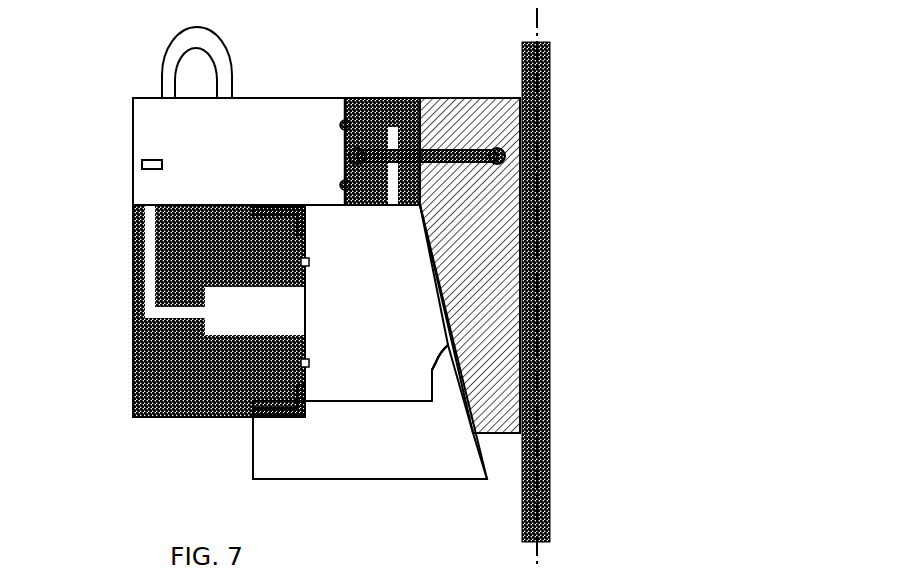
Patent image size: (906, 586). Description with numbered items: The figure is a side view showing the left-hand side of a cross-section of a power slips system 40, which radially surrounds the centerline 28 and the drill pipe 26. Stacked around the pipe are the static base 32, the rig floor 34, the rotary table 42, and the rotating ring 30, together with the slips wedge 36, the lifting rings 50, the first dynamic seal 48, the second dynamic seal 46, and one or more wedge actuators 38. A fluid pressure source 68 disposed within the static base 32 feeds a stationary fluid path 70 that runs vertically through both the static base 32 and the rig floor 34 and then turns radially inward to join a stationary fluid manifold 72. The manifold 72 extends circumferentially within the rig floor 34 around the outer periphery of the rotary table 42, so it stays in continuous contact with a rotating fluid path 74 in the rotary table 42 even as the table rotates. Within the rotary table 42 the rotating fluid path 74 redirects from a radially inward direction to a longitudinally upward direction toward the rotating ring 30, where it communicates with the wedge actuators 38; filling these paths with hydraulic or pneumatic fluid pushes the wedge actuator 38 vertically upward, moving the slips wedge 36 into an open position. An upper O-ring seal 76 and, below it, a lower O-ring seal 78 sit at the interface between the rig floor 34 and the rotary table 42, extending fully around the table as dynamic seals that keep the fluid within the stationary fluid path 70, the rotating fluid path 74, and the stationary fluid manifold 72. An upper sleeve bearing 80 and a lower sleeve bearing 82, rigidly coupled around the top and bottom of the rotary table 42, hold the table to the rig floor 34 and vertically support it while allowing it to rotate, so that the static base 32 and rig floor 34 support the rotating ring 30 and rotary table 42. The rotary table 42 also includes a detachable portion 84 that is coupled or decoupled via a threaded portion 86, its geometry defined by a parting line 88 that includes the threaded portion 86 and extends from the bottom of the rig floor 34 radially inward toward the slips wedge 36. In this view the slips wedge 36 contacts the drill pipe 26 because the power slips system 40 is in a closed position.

The drill pipe 26 is at (550, 162).
The centerline 28 is at (538, 30).
The rotating ring 30 is at (410, 110).
The static base 32 is at (152, 134).
The rig floor 34 is at (155, 395).
The slips wedge 36 is at (495, 397).
The wedge actuator 38 is at (465, 158).
The power slips system 40 is at (683, 240).
The rotary table 42 is at (422, 348).
The second dynamic seal 46 is at (343, 182).
The first dynamic seal 48 is at (347, 122).
The lifting rings 50 is at (185, 48).
The fluid pressure source 68 is at (162, 164).
The stationary fluid path 70 is at (157, 257).
The stationary fluid manifold 72 is at (238, 333).
The rotating fluid path 74 is at (387, 308).
The upper O-ring seal 76 is at (312, 255).
The lower O-ring seal 78 is at (313, 363).
The upper sleeve bearing 80 is at (278, 217).
The lower sleeve bearing 82 is at (257, 418).
The detachable portion 84 is at (366, 452).
The threaded portion 86 is at (433, 402).
The parting line 88 is at (397, 403).